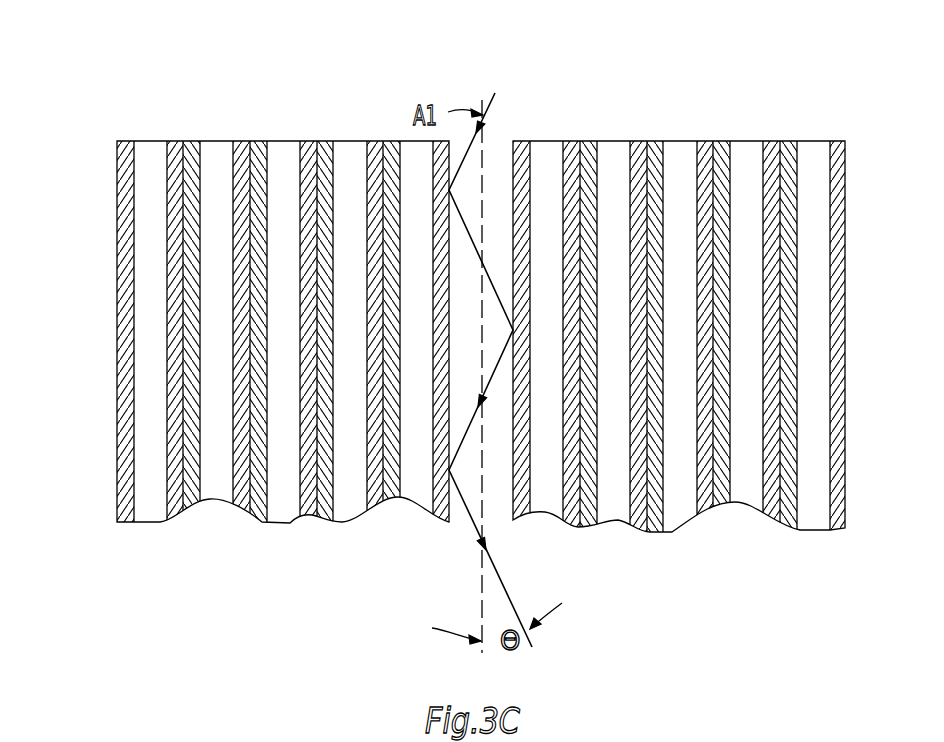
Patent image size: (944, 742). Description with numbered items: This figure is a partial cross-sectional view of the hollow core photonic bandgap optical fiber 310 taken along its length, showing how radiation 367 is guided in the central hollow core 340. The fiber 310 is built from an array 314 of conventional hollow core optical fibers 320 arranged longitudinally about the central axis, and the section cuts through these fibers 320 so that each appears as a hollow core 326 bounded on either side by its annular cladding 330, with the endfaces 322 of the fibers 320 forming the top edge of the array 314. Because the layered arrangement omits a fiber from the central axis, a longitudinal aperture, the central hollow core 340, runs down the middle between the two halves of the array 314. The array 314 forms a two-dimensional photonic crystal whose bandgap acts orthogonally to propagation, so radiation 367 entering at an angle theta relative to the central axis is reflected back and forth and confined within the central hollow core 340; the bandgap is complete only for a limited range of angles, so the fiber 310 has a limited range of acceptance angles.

The hollow core photonic bandgap optical fiber 310 is at (824, 47).
The array 314 is at (100, 278).
The endface 322 is at (770, 145).
The hollow core optical fibers 320 is at (277, 146).
The hollow core 326 is at (148, 505).
The annular cladding 330 is at (122, 460).
The central hollow core 340 is at (493, 145).
The radiation 367 is at (470, 515).